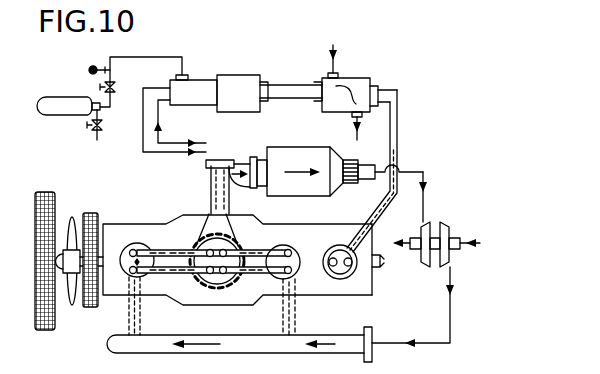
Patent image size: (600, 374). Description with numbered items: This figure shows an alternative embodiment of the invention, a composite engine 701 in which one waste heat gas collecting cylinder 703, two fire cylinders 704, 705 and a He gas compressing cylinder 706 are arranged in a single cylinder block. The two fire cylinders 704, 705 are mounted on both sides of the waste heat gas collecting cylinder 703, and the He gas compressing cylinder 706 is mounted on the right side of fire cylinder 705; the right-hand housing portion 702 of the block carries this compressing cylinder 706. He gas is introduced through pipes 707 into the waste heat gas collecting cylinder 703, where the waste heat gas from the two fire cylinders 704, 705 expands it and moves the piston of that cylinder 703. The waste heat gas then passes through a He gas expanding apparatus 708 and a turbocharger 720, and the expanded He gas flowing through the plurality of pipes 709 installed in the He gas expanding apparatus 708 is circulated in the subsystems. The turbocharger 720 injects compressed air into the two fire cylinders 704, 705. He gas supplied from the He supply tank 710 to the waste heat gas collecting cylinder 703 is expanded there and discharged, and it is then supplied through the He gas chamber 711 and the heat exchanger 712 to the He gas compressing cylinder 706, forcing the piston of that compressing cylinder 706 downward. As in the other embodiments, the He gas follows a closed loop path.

The composite engine 701 is at (138, 210).
The engine housing 702 is at (343, 224).
The waste heat gas collecting cylinder 703 is at (223, 282).
The fire cylinder 704 is at (128, 276).
The fire cylinder 705 is at (300, 280).
The He gas compressing cylinder 706 is at (353, 275).
The pipes 707 is at (206, 162).
The He gas expanding apparatus 708 is at (292, 160).
The pipes 709 is at (375, 160).
The He supply tank 710 is at (62, 100).
The He gas chamber 711 is at (355, 90).
The heat exchanger 712 is at (237, 88).
The turbo charger 720 is at (447, 226).